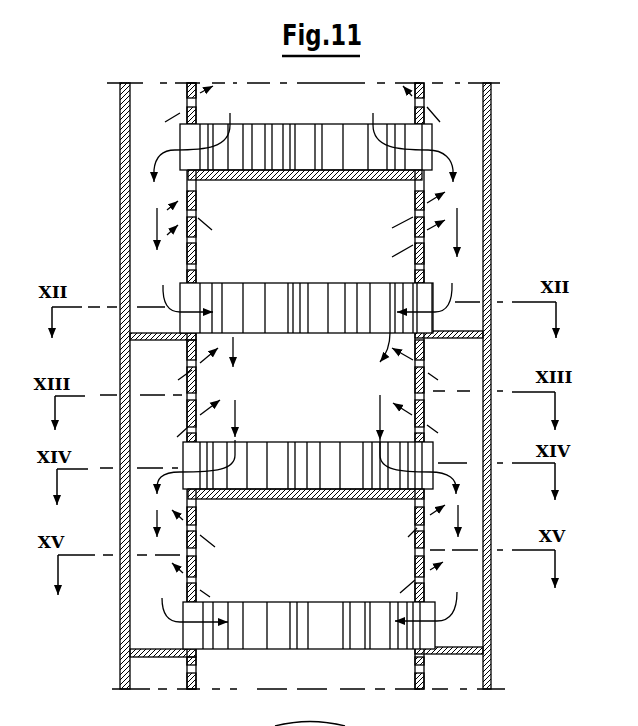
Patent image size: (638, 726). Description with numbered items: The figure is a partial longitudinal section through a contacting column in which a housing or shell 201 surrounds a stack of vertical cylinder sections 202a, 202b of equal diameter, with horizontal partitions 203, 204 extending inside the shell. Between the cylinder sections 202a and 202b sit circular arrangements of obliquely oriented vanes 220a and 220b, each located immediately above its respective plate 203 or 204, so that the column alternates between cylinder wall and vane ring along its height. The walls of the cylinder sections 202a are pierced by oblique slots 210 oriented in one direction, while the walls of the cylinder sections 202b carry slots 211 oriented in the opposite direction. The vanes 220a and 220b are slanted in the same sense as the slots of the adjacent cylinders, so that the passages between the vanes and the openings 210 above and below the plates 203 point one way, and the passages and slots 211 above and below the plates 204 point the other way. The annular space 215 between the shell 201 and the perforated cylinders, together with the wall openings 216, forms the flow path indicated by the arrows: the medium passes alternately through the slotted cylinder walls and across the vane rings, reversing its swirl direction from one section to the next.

The housing or shell 201 is at (488, 126).
The cylinder section 202a is at (417, 227).
The cylinder section 202b is at (426, 402).
The horizontal partition 203 is at (311, 182).
The horizontal partition 204 is at (452, 655).
The slots 210 is at (196, 211).
The slots 211 is at (197, 393).
The flow passage 215 is at (158, 160).
The openings 216 is at (200, 240).
The circular arrangement of vanes 220a is at (273, 295).
The circular arrangement of vanes 220b is at (308, 453).